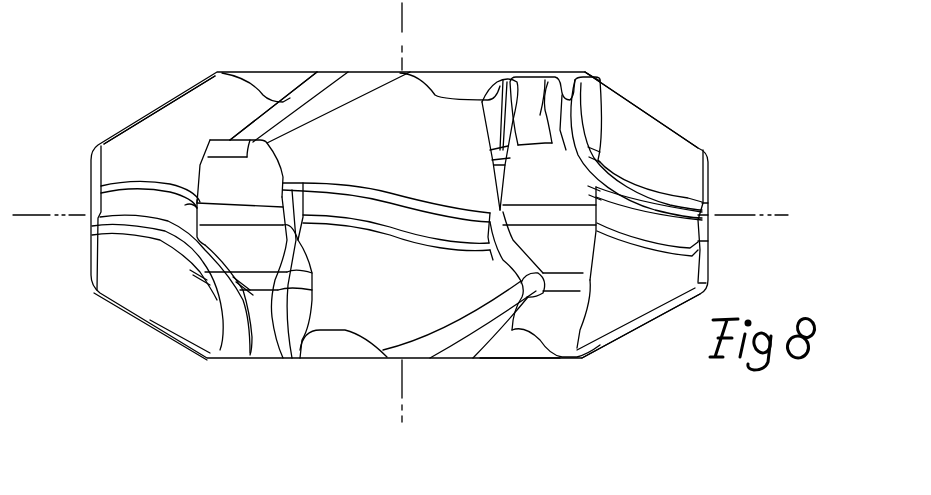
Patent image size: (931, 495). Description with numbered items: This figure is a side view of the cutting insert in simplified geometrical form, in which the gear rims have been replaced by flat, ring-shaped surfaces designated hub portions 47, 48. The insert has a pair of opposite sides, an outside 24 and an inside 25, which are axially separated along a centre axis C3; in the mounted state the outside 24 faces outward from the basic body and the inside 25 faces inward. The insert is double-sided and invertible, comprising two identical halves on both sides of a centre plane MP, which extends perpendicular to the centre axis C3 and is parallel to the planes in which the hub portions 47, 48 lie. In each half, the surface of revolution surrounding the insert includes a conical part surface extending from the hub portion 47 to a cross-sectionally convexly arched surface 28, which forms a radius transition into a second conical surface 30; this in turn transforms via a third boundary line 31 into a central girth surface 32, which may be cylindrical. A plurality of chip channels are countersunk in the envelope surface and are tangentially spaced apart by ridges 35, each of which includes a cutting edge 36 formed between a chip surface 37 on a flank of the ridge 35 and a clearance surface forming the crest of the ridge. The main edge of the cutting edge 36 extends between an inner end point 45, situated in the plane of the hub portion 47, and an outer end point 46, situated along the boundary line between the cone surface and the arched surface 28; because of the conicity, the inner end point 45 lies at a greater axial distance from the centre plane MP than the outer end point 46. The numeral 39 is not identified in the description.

The outside 24 is at (658, 117).
The inside 25 is at (648, 322).
The convexly arched surface 28 is at (523, 152).
The second conical surface 30 is at (555, 195).
The third boundary line 31 is at (255, 203).
The central girth surface 32 is at (257, 215).
The ridge 35 is at (328, 72).
The cutting edge 36 is at (258, 119).
The chip surface 37 is at (666, 164).
The side face 39 is at (171, 162).
The inner end point 45 is at (587, 72).
The outer end point 46 is at (195, 207).
The hub portion 47 is at (528, 72).
The hub portion 48 is at (517, 358).
The centre axis C3 is at (402, 23).
The centre plane MP is at (400, 203).